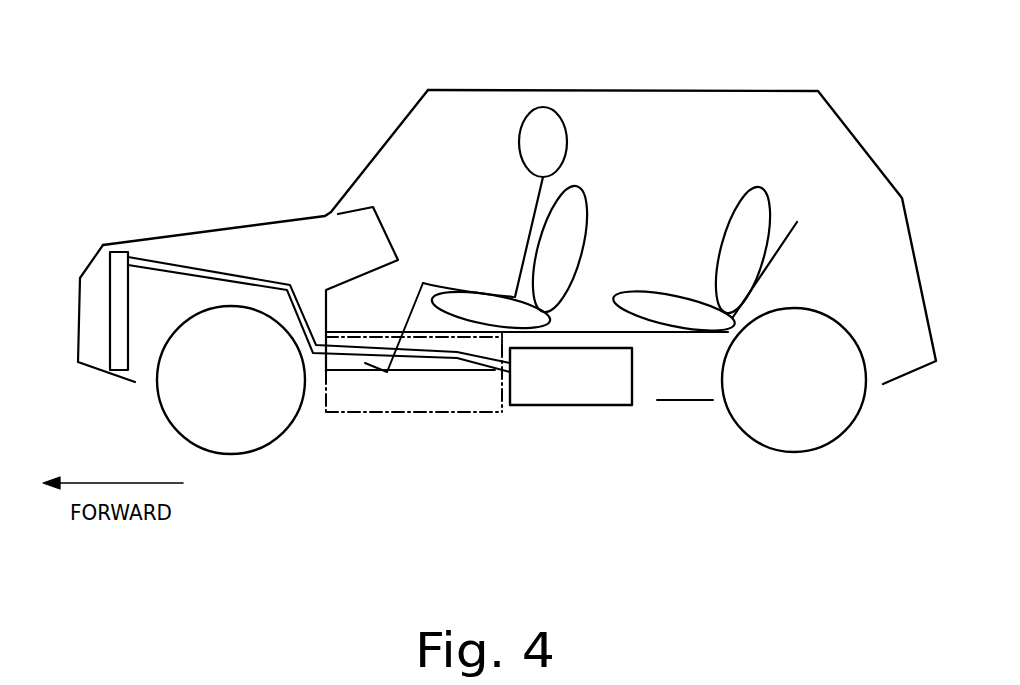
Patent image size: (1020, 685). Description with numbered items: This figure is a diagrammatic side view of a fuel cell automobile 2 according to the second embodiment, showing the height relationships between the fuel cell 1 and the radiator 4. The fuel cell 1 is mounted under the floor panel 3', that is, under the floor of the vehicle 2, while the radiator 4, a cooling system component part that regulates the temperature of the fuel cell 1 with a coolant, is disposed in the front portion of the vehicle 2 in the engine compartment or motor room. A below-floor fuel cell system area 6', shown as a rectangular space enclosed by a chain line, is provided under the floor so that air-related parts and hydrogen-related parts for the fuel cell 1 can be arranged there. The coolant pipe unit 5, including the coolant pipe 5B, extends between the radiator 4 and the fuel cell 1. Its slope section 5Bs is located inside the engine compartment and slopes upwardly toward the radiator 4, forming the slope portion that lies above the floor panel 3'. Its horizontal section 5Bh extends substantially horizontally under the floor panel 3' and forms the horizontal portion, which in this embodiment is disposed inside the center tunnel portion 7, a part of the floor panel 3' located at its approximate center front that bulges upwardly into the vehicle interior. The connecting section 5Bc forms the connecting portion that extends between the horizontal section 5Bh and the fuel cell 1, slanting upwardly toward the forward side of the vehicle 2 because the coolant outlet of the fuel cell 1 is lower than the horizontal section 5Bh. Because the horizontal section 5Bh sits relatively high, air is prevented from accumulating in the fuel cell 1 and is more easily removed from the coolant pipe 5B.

The fuel cell 1 is at (567, 405).
The fuel cell automobile 2 is at (633, 88).
The floor panel 3' is at (685, 409).
The radiator 4 is at (120, 252).
The coolant pipe unit 5 is at (280, 143).
The coolant pipe 5B is at (219, 258).
The slope section of coolant pipe 5Bs is at (167, 278).
The horizontal section of coolant pipe 5Bh is at (417, 358).
The connecting section of coolant pipe 5Bc is at (502, 368).
The below-floor fuel cell system area 6' is at (414, 415).
The center tunnel portion 7 is at (435, 343).